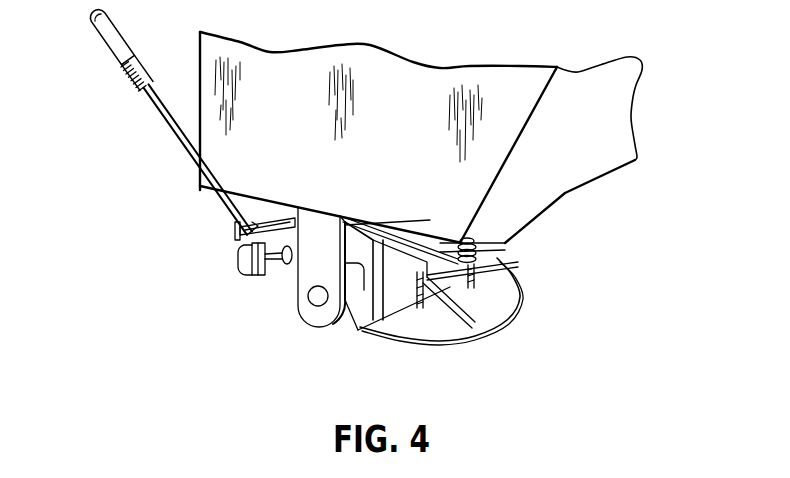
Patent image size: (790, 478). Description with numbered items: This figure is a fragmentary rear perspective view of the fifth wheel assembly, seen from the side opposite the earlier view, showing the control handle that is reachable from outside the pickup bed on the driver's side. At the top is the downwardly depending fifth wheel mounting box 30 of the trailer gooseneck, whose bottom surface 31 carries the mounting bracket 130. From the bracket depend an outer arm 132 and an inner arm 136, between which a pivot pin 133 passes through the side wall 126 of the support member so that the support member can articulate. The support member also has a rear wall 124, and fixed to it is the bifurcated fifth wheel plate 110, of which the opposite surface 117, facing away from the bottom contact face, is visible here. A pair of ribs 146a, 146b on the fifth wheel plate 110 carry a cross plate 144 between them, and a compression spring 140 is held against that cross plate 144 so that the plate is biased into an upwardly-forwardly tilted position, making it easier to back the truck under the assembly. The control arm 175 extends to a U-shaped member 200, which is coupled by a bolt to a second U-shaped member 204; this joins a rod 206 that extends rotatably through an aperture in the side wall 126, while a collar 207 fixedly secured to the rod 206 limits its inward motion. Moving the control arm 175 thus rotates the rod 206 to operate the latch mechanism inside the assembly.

The fifth wheel mounting box 30 is at (643, 102).
The bottom surface 31 is at (603, 173).
The control arm 175 is at (170, 122).
The collar 207 is at (300, 231).
The second U-shaped member 204 is at (240, 270).
The U-shaped member 200 is at (257, 256).
The rod 206 is at (273, 262).
The arm 132 is at (323, 252).
The pivot pin 133 is at (320, 310).
The mounting bracket 130 is at (299, 293).
The side wall 126 is at (352, 328).
The rear wall 124 is at (404, 303).
The inner arm 136 is at (400, 233).
The compression spring 140 is at (507, 245).
The cross plate 144 is at (452, 275).
The rib 146b is at (507, 292).
The rib 146a is at (483, 323).
The opposite surface 117 is at (422, 328).
The fifth wheel plate 110 is at (397, 344).